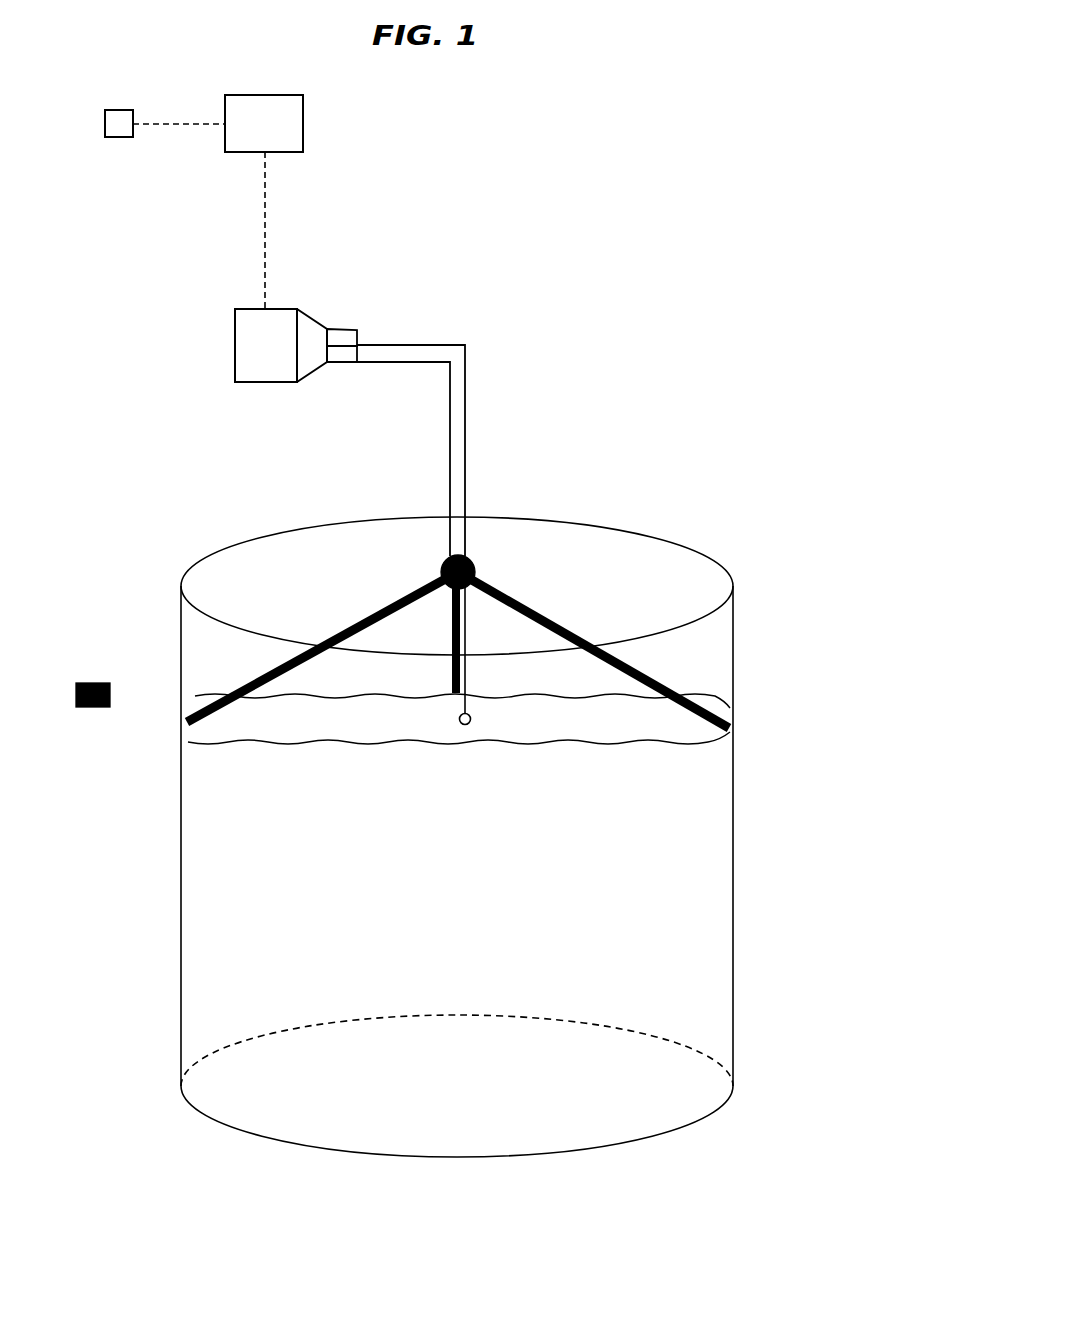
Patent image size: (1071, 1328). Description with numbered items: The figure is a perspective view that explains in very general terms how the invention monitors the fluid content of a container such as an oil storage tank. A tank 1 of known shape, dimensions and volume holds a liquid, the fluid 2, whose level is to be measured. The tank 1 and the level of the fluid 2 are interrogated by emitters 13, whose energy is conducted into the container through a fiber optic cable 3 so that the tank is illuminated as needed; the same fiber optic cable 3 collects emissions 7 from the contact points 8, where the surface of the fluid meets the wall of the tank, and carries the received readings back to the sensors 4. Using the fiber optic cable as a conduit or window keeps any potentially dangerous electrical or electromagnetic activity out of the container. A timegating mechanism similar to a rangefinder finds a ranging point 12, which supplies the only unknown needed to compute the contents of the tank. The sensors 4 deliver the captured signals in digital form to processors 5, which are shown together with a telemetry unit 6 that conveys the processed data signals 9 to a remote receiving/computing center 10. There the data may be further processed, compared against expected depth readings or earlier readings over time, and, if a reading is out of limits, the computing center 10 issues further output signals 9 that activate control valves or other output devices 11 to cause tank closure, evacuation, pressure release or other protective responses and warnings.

The tank 1 is at (190, 1108).
The fluid 2 is at (709, 744).
The fiber optic cable 3 is at (459, 402).
The sensors 4 is at (343, 333).
The processors 5 is at (307, 326).
The telemetry 6 is at (247, 343).
The emissions 7 is at (91, 661).
The contact points 8 is at (703, 734).
The signals 9 is at (261, 225).
The receiving/computing center 10 is at (286, 128).
The control valves 11 is at (147, 58).
The ranging point 12 is at (476, 712).
The emitters 13 is at (337, 356).